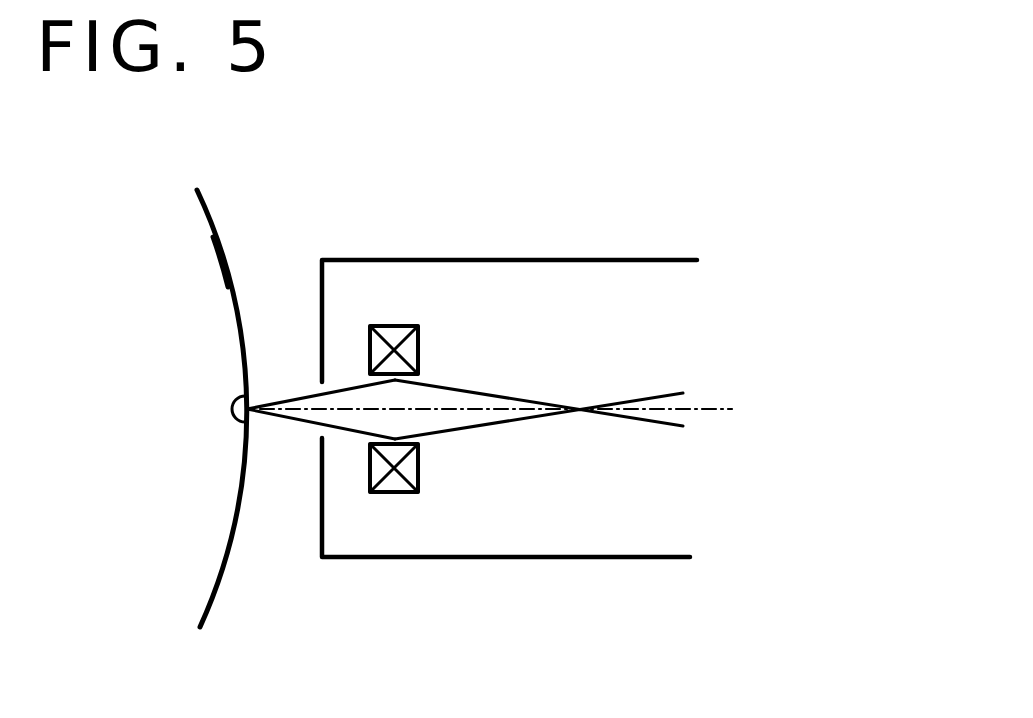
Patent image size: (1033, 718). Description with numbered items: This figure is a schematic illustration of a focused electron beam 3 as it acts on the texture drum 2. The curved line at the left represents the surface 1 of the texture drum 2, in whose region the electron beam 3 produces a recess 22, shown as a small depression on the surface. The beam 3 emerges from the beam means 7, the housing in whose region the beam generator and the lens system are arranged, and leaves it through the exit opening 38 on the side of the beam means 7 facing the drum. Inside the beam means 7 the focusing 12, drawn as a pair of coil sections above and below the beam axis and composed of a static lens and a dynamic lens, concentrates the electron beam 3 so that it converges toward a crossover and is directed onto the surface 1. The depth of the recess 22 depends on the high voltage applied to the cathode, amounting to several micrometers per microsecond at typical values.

The surface 1 is at (205, 206).
The texture drum 2 is at (218, 255).
The electron beam 3 is at (497, 395).
The beam means 7 is at (578, 260).
The focusing 12 is at (397, 326).
The recess 22 is at (232, 414).
The exit opening 38 is at (307, 392).